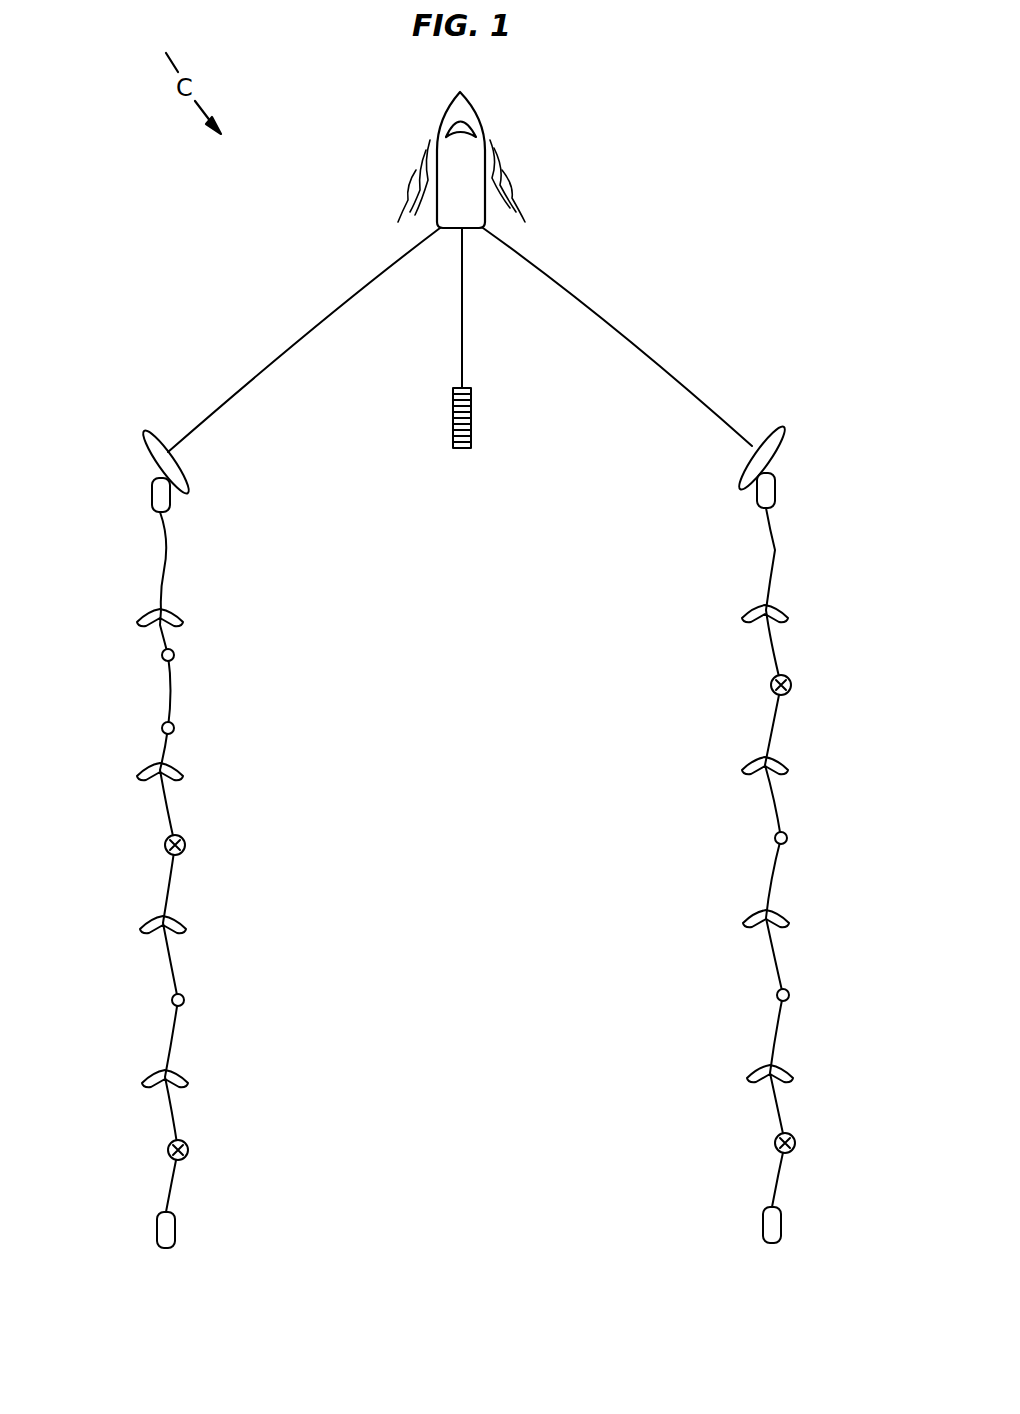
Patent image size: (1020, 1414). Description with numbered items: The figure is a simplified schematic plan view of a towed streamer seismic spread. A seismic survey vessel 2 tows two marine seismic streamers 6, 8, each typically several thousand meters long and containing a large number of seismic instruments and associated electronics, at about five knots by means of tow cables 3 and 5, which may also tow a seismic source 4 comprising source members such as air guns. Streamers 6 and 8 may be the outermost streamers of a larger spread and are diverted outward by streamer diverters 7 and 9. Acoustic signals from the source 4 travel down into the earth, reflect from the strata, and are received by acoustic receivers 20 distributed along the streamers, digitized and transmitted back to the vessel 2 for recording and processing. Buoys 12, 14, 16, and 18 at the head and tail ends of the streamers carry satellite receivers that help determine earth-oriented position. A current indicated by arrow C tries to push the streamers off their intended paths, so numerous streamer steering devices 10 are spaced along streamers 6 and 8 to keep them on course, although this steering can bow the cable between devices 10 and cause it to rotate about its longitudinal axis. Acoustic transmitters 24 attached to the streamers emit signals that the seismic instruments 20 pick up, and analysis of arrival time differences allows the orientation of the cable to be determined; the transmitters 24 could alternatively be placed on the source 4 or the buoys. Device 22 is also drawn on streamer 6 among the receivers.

The seismic survey vessel 2 is at (449, 115).
The tow cable 3 is at (364, 305).
The seismic source 4 is at (471, 424).
The tow cable 5 is at (601, 331).
The marine seismic streamer 6 is at (165, 545).
The streamer diverter 7 is at (142, 430).
The marine seismic streamer 8 is at (772, 538).
The streamer diverter 9 is at (785, 426).
The streamer steering device 10 is at (142, 614).
The buoy 12 is at (152, 497).
The buoy 14 is at (157, 1228).
The buoy 16 is at (776, 492).
The buoy 18 is at (781, 1224).
The acoustic receiver 20 is at (175, 656).
The acoustic device 22 is at (175, 730).
The acoustic transmitter 24 is at (186, 843).